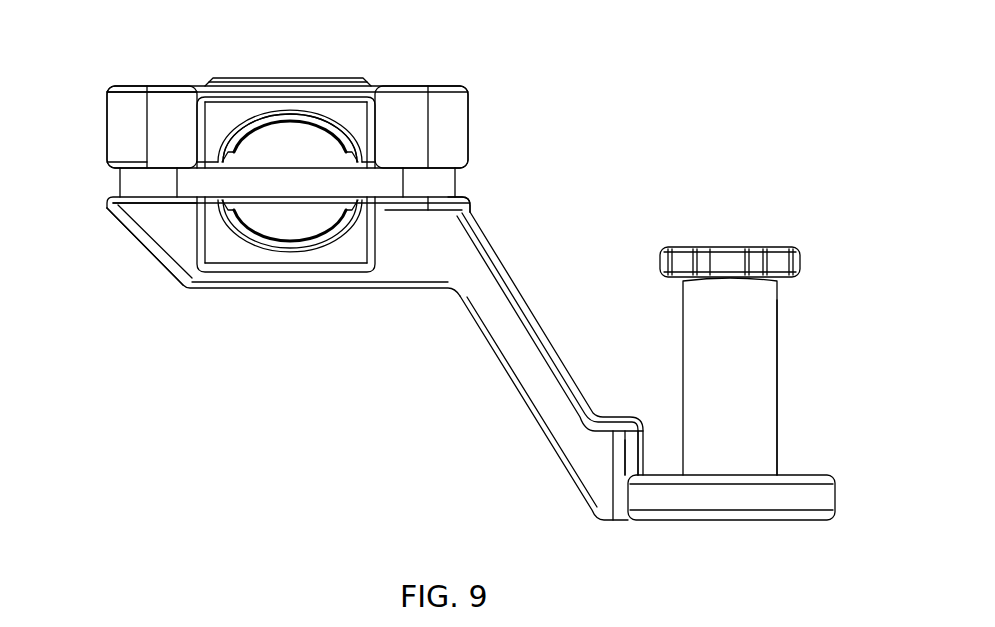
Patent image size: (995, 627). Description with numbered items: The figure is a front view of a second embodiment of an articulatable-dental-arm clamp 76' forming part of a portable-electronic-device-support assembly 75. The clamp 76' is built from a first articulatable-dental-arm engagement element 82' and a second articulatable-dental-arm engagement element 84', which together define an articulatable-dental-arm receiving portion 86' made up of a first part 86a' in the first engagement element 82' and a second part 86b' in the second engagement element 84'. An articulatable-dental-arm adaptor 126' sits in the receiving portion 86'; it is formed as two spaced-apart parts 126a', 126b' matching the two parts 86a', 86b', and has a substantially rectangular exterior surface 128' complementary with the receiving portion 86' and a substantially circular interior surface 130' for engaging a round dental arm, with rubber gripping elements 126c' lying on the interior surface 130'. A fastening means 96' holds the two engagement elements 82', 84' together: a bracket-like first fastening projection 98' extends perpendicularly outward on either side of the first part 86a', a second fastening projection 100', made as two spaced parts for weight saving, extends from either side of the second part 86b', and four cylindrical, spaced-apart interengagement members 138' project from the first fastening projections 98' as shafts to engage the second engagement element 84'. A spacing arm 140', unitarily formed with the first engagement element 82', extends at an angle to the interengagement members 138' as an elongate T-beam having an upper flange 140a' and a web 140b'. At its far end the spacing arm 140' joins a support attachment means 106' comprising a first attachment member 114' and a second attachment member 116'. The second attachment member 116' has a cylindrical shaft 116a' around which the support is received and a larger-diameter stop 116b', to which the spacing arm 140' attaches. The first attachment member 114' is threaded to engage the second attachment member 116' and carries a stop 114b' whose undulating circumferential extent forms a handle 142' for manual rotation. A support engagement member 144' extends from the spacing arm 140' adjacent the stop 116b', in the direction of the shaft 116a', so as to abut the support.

The portable-electronic-device-support assembly 75 is at (664, 110).
The articulatable-dental-arm clamp 76' is at (284, 182).
The first articulatable-dental-arm engagement element 82' is at (278, 253).
The second articulatable-dental-arm engagement element 84' is at (246, 86).
The articulatable-dental-arm receiving portion 86' is at (290, 82).
The first part of the articulatable-dental-arm receiving portion 86a' is at (286, 273).
The second part of the articulatable-dental-arm receiving portion 86b' is at (281, 93).
The fastening means 96' is at (112, 220).
The first fastening projection 98' is at (292, 213).
The second fastening projection 100' is at (293, 97).
The support attachment means 106' is at (771, 327).
The first attachment member 114' is at (772, 251).
The stop of the first attachment member 114b' is at (764, 227).
The second attachment member 116' is at (752, 473).
The shaft 116a' is at (828, 387).
The stop 116b' is at (731, 530).
The articulatable-dental-arm adaptor 126' is at (317, 96).
The first adaptor part 126a' is at (321, 282).
The second adaptor part 126b' is at (290, 96).
The rubber gripping elements 126c' is at (290, 273).
The exterior surface 128' is at (111, 114).
The interior surface 130' is at (79, 157).
The interengagement members 138' is at (287, 146).
The spacing arm 140' is at (535, 382).
The upper flange 140a' is at (550, 343).
The web 140b' is at (541, 408).
The handle 142' is at (768, 228).
The support engagement member 144' is at (584, 491).